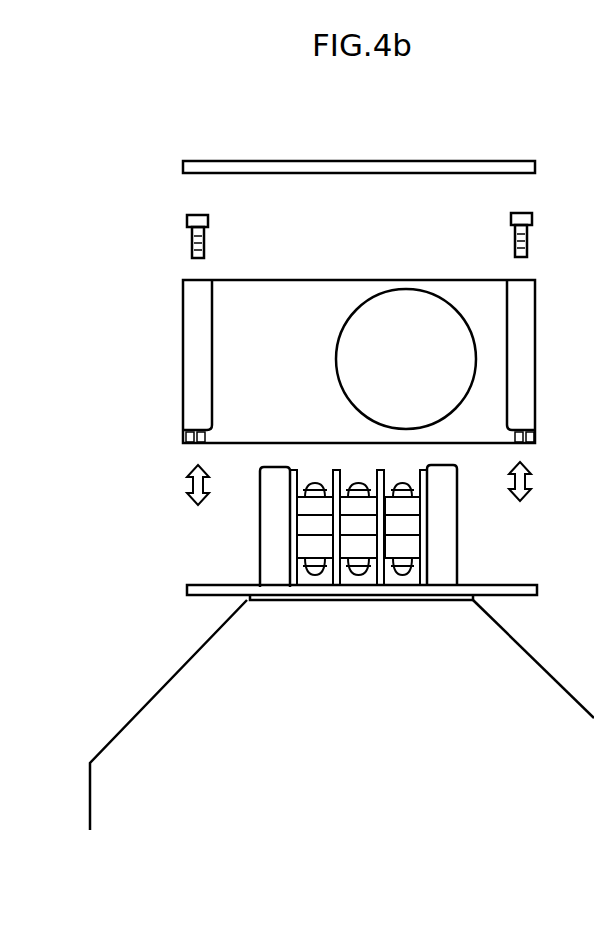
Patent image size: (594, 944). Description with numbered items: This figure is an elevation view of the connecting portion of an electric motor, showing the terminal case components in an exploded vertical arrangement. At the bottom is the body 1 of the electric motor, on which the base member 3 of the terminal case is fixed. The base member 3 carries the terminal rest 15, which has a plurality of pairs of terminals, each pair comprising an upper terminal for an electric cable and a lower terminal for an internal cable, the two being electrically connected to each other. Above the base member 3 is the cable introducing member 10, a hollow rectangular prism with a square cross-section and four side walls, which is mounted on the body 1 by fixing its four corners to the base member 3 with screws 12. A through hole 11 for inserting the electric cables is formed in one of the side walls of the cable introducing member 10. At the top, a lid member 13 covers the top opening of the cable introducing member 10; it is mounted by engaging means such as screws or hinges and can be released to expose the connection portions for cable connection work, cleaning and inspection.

The body 1 is at (213, 690).
The base member 3 is at (507, 585).
The cable introducing member 10 is at (190, 365).
The through hole 11 is at (407, 298).
The screws 12 is at (191, 236).
The lid member 13 is at (443, 160).
The terminal rest 15 is at (258, 483).